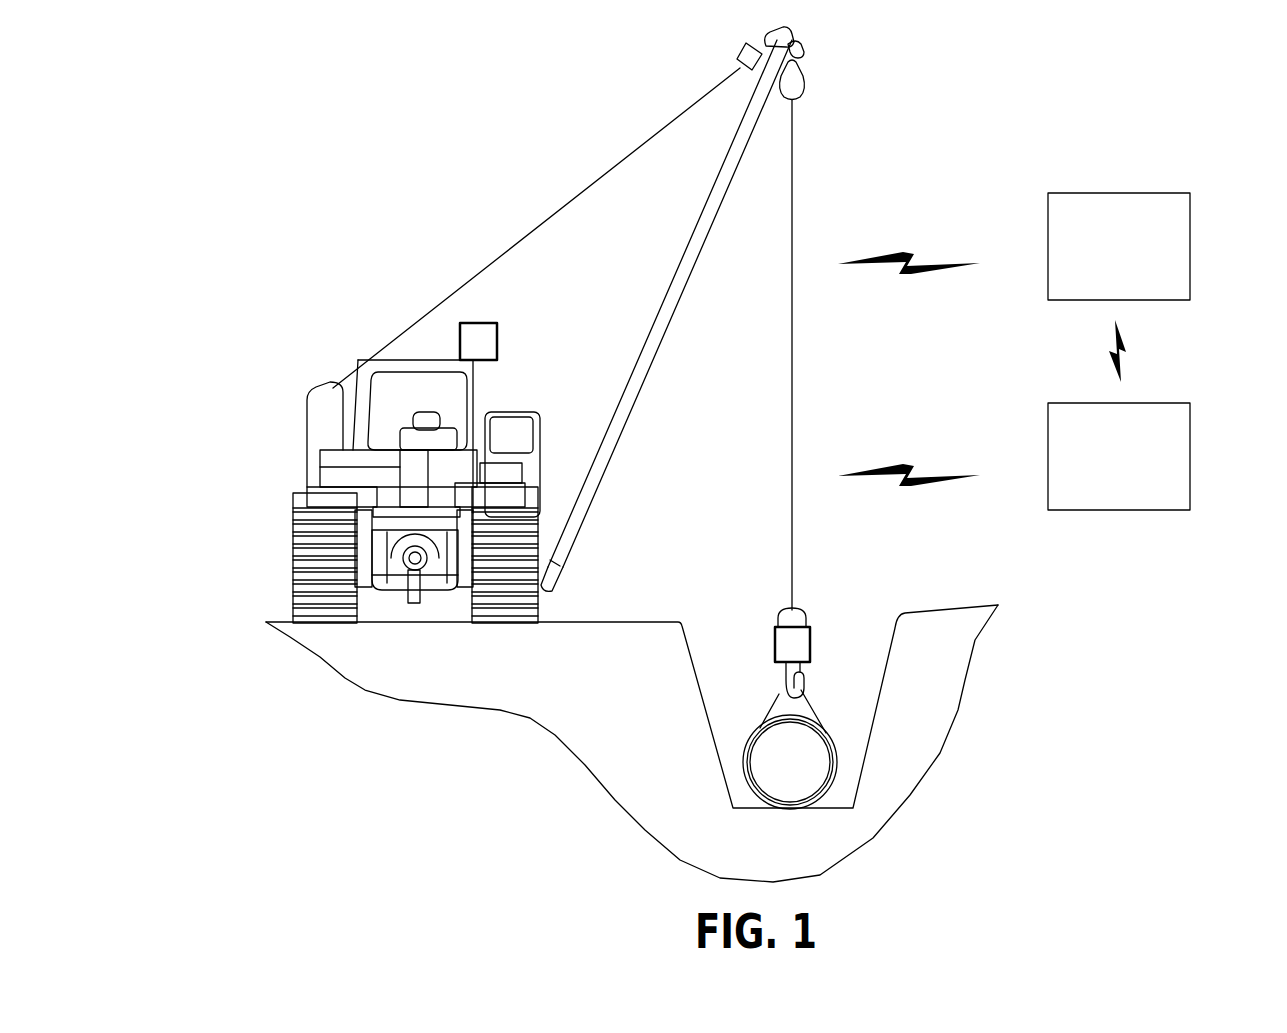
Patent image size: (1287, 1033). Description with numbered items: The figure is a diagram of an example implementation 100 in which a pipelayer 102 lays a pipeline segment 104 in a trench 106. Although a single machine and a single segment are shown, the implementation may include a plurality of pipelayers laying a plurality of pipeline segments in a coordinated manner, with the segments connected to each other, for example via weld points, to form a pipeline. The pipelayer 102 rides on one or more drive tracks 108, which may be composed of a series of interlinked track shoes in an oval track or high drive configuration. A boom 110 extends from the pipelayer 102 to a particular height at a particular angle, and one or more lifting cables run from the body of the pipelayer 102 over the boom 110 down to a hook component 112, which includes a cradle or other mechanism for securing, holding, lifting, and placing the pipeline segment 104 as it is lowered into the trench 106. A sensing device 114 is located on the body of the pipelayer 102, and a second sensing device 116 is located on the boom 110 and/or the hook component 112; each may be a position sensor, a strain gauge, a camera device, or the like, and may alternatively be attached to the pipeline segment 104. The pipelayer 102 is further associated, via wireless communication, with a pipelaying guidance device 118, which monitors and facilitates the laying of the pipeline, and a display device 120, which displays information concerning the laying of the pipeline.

The example implementation 100 is at (238, 62).
The pipelayer 102 is at (358, 368).
The pipeline segment 104 is at (832, 737).
The trench 106 is at (717, 775).
The drive tracks 108 is at (470, 623).
The boom 110 is at (682, 263).
The hook component 112 is at (774, 689).
The sensing device 114 is at (497, 343).
The sensing device 116 is at (879, 626).
The pipelaying guidance device 118 is at (1260, 202).
The display device 120 is at (1260, 412).